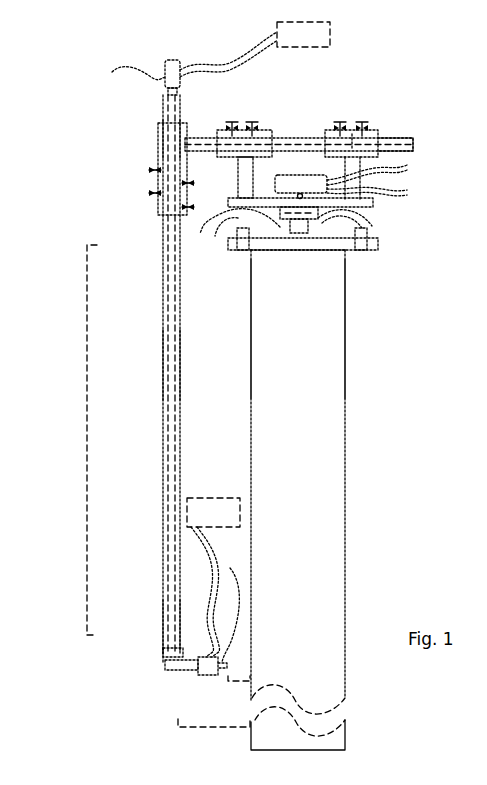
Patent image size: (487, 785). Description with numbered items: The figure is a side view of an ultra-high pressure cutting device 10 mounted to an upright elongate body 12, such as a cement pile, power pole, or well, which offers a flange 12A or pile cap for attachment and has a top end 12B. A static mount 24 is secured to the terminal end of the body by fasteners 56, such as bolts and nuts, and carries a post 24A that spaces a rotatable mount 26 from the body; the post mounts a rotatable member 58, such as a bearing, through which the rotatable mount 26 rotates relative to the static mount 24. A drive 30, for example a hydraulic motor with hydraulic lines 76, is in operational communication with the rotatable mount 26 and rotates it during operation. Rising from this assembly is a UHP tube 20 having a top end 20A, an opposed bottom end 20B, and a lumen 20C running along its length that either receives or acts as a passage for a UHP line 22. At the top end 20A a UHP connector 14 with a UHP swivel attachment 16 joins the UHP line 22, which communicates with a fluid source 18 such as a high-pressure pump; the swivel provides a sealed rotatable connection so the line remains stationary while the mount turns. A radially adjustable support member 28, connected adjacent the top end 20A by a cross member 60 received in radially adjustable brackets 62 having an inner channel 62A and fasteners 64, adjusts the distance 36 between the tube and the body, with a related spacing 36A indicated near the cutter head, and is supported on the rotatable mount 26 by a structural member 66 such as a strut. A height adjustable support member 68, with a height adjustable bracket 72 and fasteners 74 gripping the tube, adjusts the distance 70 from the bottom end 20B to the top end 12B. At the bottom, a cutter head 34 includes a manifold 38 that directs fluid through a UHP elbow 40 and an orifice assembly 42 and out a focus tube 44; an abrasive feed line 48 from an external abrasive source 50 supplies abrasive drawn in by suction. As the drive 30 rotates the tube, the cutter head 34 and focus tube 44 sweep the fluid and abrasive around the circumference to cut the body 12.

The UHP cutting device 10 is at (153, 36).
The elongate body 12 is at (347, 313).
The flange 12A is at (327, 256).
The top end of elongate body 12B is at (270, 270).
The UHP connector 14 is at (183, 60).
The UHP swivel attachment 16 is at (126, 79).
The fluid source 18 is at (314, 44).
The UHP tube 20 is at (163, 288).
The top end of UHP tube 20A is at (120, 153).
The bottom end of UHP tube 20B is at (137, 632).
The lumen 20C is at (165, 378).
The UHP line 22 is at (248, 40).
The static mount 24 is at (364, 245).
The post 24A is at (200, 236).
The rotatable mount 26 is at (378, 210).
The radially adjustable support member 28 is at (287, 127).
The drive 30 is at (298, 175).
The cutter head 34 is at (205, 692).
The distance 36 is at (222, 730).
The outlet port 36A is at (240, 683).
The manifold 38 is at (158, 650).
The UHP elbow 40 is at (163, 669).
The orifice assembly 42 is at (182, 682).
The focus tube 44 is at (229, 602).
The abrasive feed line 48 is at (198, 555).
The external abrasive source 50 is at (224, 522).
The fasteners 56 is at (226, 247).
The rotatable member 58 is at (322, 216).
The cross member 60 is at (420, 137).
The radially adjustable brackets 62 is at (382, 130).
The inner channel 62A is at (351, 128).
The fasteners 64 is at (230, 122).
The structural member 66 is at (238, 167).
The height adjustable support member 68 is at (155, 150).
The distance 70 is at (87, 406).
The height adjustable bracket 72 is at (150, 172).
The fasteners 74 is at (155, 197).
The hydraulic lines 76 is at (388, 165).